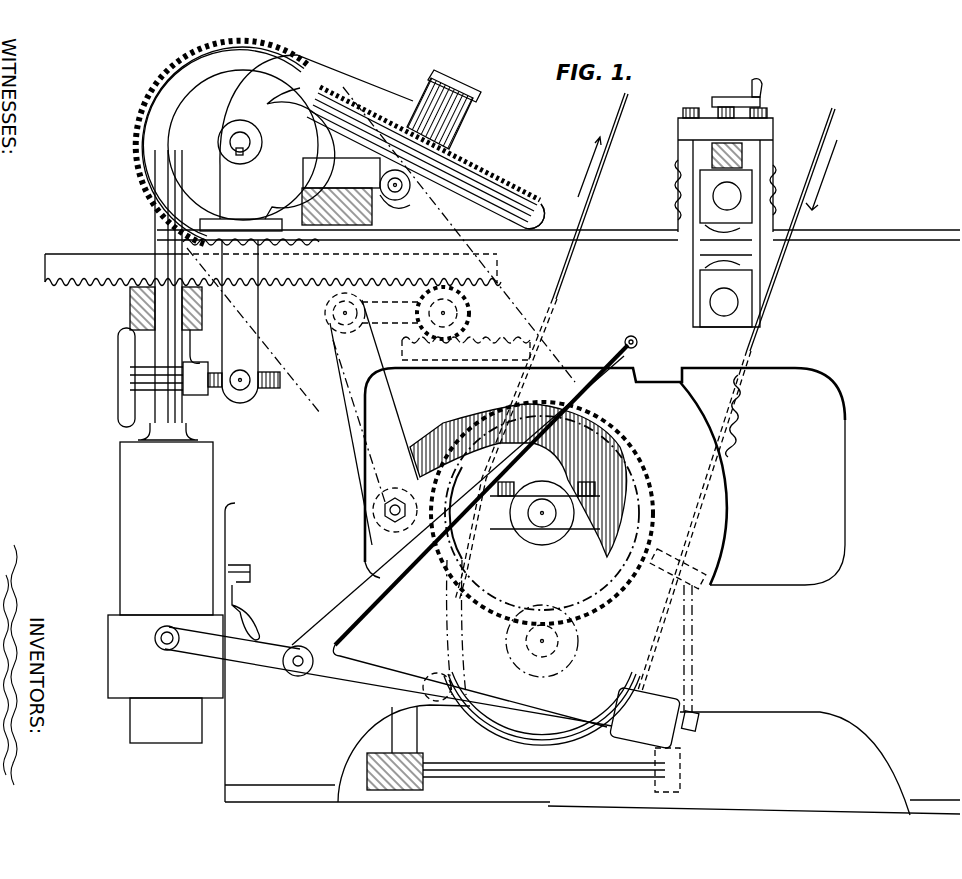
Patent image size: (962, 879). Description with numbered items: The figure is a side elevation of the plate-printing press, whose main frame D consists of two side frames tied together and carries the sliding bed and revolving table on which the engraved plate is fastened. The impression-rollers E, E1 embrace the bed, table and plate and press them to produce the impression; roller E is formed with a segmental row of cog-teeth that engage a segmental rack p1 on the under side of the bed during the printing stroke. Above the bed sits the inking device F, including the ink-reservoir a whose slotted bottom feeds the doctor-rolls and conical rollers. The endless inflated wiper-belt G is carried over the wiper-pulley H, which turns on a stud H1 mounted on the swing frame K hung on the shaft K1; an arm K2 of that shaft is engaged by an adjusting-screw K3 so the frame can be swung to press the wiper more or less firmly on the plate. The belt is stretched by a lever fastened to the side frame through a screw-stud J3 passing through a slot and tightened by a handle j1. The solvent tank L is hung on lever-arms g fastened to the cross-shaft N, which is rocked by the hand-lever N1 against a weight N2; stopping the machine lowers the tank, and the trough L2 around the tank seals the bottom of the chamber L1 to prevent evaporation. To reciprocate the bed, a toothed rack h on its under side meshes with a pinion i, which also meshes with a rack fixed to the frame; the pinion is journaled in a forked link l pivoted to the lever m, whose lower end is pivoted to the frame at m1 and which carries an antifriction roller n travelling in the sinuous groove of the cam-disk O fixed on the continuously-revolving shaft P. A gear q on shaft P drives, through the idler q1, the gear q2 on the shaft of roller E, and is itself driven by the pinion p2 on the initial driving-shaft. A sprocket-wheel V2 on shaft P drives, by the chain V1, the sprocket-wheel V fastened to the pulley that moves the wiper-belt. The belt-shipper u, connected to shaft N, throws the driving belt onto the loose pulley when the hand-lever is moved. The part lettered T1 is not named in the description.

The sprocket-wheel V is at (148, 90).
The disk T1 is at (243, 145).
The shaft K1 is at (243, 133).
The swing frame K is at (368, 92).
The stud H1 is at (444, 104).
The wiper-belt G is at (505, 190).
The wiper-pulley H is at (535, 201).
The inking device F is at (356, 191).
The ink-reservoir a is at (160, 236).
The toothed rack h is at (261, 270).
The forked link l is at (354, 313).
The pinion i is at (423, 313).
The chain V1 is at (474, 323).
The lever m is at (374, 422).
The arm K2 is at (253, 326).
The adjusting-screw K3 is at (262, 390).
The hand-lever N1 is at (622, 345).
The cam-disk O is at (605, 476).
The idler q1 is at (735, 432).
The sprocket-wheel V2 is at (548, 513).
The shaft P is at (535, 518).
The antifriction roller n is at (388, 520).
The gear q is at (588, 600).
The belt-shipper u is at (688, 620).
The main frame D is at (830, 640).
The chamber L1 is at (166, 528).
The screw-stud J3 is at (252, 578).
The handle j1 is at (255, 618).
The trough L2 is at (165, 656).
The lever-arms g is at (383, 676).
The cross-shaft N is at (294, 669).
The tank L is at (166, 720).
The segmental rack p1 is at (560, 636).
The pinion p2 is at (552, 641).
The pivot m1 is at (531, 652).
The weight N2 is at (653, 718).
The impression-roller E1 is at (725, 203).
The impression-roller E is at (726, 298).
The gear q2 is at (710, 190).